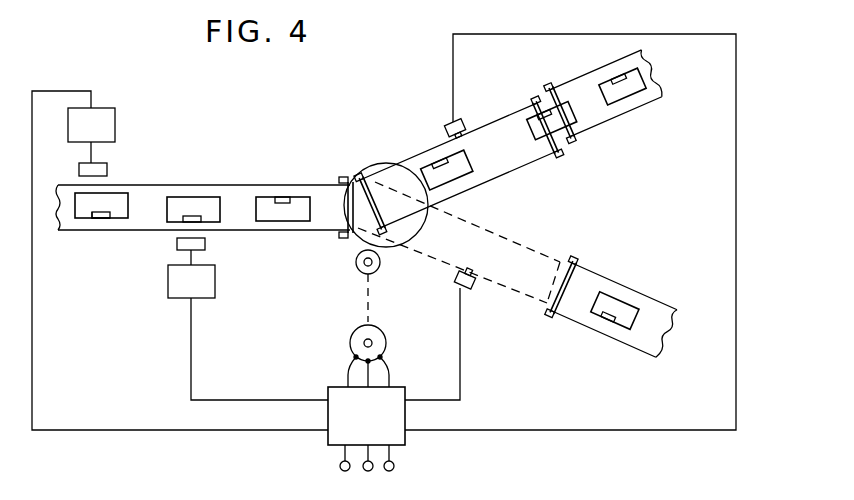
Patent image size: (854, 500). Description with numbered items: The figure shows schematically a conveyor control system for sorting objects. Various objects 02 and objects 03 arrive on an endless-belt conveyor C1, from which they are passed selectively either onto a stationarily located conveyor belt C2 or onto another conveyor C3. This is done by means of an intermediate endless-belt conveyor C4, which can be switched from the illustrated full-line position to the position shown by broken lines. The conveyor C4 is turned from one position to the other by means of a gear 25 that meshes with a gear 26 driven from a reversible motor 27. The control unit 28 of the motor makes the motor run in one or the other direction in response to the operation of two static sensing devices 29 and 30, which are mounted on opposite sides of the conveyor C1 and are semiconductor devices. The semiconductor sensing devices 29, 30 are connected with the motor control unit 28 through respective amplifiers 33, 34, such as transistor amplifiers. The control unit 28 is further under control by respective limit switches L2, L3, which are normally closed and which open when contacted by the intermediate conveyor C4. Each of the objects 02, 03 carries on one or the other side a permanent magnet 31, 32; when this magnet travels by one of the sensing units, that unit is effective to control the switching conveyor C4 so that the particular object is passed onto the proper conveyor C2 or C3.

The amplifier 33 is at (129, 126).
The static sensing device 29 is at (107, 168).
The permanent magnet 32 is at (97, 220).
The object 03 is at (118, 220).
The object 02 is at (187, 183).
The endless-belt conveyor C1 is at (228, 174).
The permanent magnet 31 is at (283, 197).
The static sensing device 30 is at (177, 244).
The amplifier 34 is at (225, 286).
The gear 25 is at (373, 170).
The intermediate endless-belt conveyor C4 is at (493, 175).
The stationarily located conveyor belt C2 is at (614, 122).
The conveyor C3 is at (623, 337).
The limit switch L2 is at (464, 122).
The limit switch L3 is at (474, 288).
The gear 26 is at (356, 264).
The reversible motor 27 is at (386, 340).
The control unit 28 is at (373, 424).